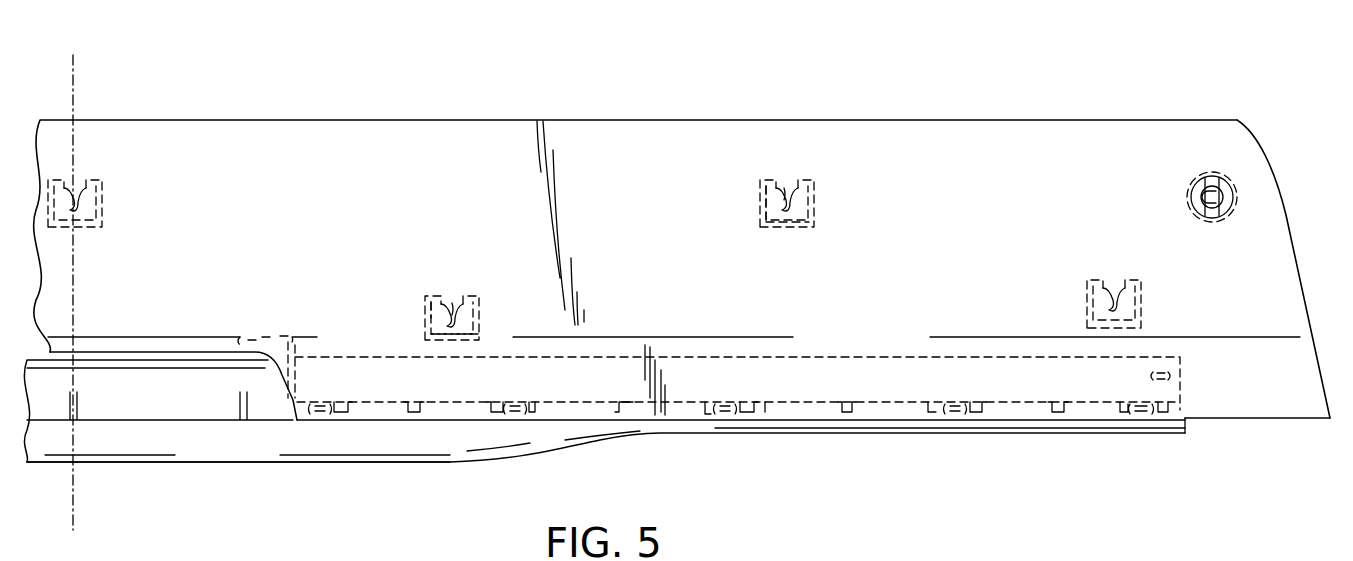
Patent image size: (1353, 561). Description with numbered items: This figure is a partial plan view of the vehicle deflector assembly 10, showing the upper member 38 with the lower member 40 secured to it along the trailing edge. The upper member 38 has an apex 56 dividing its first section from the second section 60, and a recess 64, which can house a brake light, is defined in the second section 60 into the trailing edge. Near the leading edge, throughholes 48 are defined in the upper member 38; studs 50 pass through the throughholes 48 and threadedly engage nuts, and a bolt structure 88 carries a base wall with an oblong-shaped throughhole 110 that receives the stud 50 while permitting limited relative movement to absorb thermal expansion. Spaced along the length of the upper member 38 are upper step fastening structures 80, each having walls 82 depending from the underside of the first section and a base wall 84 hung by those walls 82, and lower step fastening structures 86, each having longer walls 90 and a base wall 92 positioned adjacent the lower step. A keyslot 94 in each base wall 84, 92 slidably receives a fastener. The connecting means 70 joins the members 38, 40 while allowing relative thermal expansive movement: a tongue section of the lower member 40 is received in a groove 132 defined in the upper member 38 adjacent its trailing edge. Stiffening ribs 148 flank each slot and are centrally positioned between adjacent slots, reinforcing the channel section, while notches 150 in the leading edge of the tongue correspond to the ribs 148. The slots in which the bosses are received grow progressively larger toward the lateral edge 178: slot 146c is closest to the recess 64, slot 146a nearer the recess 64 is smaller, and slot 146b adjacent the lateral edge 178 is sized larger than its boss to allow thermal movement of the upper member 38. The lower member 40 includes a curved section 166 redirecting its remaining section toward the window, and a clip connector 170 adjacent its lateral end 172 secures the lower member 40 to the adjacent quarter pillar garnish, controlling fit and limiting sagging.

The deflector assembly 10 is at (665, 67).
The upper member 38 is at (493, 128).
The lower member 40 is at (689, 434).
The throughholes 48 is at (1197, 176).
The studs 50 is at (1222, 207).
The apex 56 is at (362, 148).
The second section 60 is at (713, 375).
The recess 64 is at (173, 355).
The connecting means 70 is at (780, 396).
The upper step fastening structures 80 is at (98, 207).
The walls 82 is at (760, 210).
The base wall 84 is at (800, 227).
The lower step fastening structures 86 is at (483, 307).
The bolt structures 88 is at (1239, 179).
The walls 90 is at (430, 317).
The base wall 92 is at (430, 333).
The keyslot 94 is at (790, 180).
The oblong-shaped throughhole 110 is at (1196, 200).
The groove 132 is at (893, 402).
The slot 146a is at (510, 414).
The slot 146b is at (1147, 411).
The slot 146c is at (320, 412).
The stiffening ribs 148 is at (622, 405).
The notches 150 is at (843, 425).
The curved section 166 is at (901, 436).
The clip connectors 170 is at (1185, 375).
The lateral end 172 is at (1188, 433).
The lateral edge 178 is at (1305, 283).